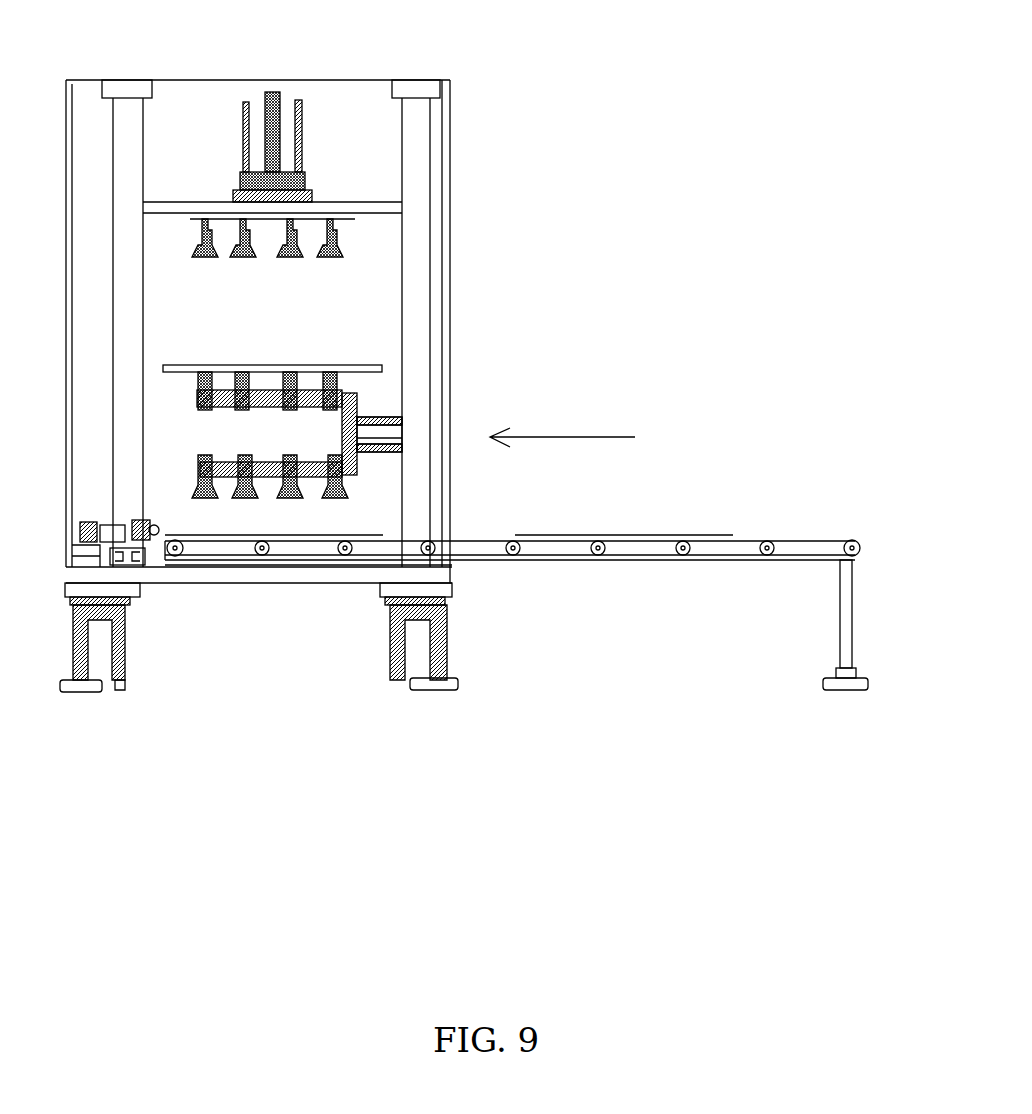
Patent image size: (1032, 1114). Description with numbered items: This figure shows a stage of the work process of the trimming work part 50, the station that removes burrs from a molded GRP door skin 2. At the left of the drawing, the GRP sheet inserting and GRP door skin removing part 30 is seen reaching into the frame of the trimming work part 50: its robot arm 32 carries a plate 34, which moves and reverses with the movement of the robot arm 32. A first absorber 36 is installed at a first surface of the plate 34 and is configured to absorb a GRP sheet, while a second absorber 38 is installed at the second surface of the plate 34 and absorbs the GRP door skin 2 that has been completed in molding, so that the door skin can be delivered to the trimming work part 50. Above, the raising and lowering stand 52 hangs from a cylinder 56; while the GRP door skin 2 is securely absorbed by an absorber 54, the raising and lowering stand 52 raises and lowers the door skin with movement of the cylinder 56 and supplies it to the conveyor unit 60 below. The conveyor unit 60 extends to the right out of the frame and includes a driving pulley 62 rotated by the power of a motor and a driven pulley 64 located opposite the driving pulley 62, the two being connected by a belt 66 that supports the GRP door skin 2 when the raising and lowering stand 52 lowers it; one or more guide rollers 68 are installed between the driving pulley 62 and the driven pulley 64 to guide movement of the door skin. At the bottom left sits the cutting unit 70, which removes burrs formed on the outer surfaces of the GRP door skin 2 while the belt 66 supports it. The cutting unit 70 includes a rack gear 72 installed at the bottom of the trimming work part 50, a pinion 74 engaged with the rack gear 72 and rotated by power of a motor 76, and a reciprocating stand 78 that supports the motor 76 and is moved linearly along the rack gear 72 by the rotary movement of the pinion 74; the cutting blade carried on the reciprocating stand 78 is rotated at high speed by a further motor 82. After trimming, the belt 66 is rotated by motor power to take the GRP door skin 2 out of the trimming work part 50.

The GRP door skin 2 is at (193, 365).
The GRP sheet inserting and GRP door skin removing part 30 is at (319, 411).
The robot arm 32 is at (402, 428).
The plate 34 is at (360, 403).
The first absorber 36 is at (345, 492).
The second absorber 38 is at (330, 365).
The trimming work part 50 is at (448, 78).
The raising and lowering stand 52 is at (222, 200).
The absorber 54 is at (248, 256).
The cylinder 56 is at (277, 135).
The conveyor unit 60 is at (560, 565).
The driving pulley 62 is at (172, 583).
The driven pulley 64 is at (862, 546).
The belt 66 is at (549, 603).
The conveyor rollers 68 is at (683, 558).
The cutting unit 70 is at (100, 522).
The rack gear 72 is at (70, 558).
The pinion 74 is at (75, 527).
The motor 76 is at (108, 525).
The reciprocating stand 78 is at (140, 520).
The motor 82 is at (152, 520).